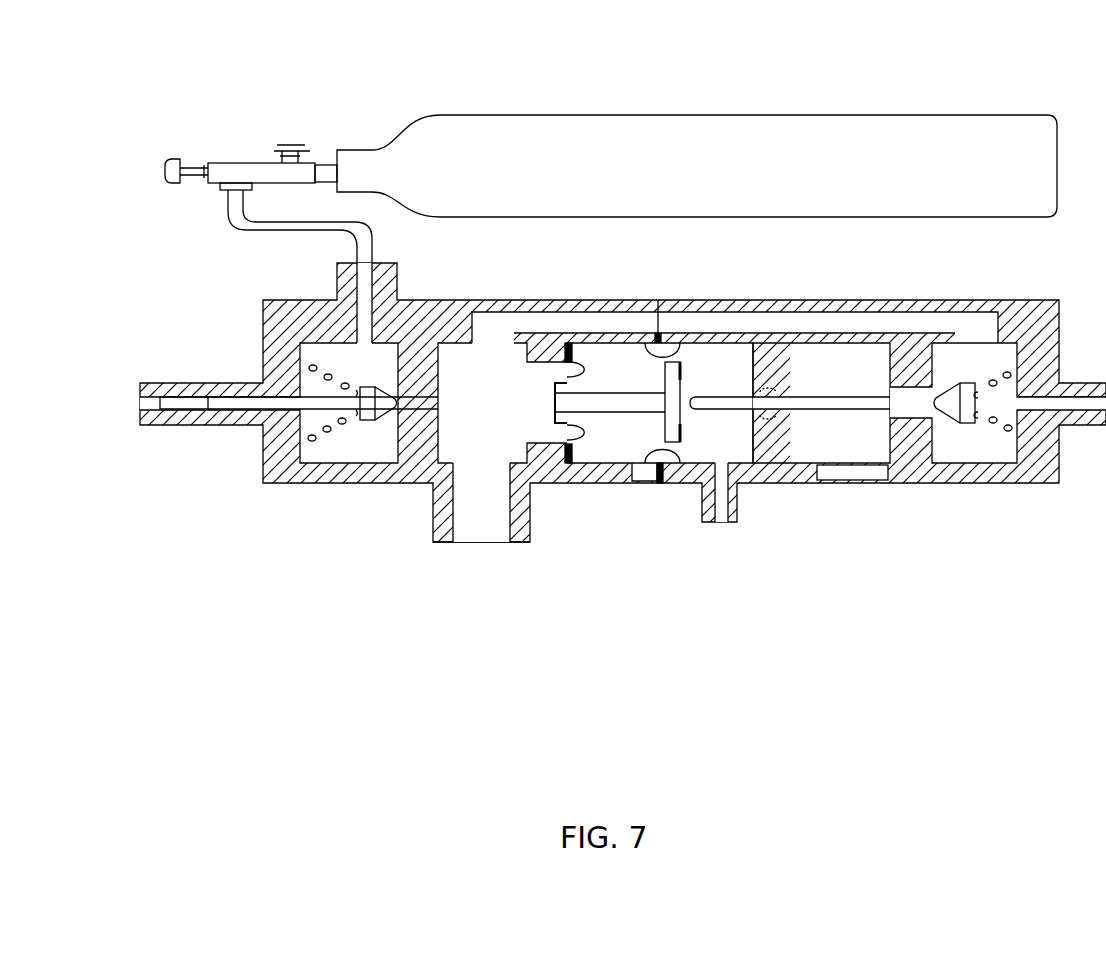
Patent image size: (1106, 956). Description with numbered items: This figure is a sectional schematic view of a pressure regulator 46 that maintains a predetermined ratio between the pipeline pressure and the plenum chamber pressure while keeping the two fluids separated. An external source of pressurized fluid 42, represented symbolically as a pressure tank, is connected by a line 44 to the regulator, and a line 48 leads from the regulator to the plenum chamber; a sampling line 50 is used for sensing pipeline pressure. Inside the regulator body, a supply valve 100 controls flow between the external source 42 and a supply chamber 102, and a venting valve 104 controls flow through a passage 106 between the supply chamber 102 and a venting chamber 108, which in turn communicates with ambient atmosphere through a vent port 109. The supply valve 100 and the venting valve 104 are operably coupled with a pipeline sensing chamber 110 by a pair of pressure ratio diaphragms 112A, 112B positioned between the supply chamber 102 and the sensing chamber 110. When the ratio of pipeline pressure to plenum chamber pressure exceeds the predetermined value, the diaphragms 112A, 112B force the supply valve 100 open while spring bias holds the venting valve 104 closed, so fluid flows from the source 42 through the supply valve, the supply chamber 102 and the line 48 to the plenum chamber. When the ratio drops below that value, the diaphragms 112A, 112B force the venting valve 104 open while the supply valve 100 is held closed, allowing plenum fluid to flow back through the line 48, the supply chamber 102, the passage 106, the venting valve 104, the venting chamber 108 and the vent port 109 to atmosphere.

The external source of pressurized fluid 42 is at (563, 82).
The line 44 is at (375, 235).
The pressure regulator 46 is at (826, 281).
The line 48 is at (505, 529).
The sampling line 50 is at (719, 526).
The supply valve 100 is at (386, 421).
The supply chamber 102 is at (435, 445).
The venting valve 104 is at (940, 425).
The passage 106 is at (923, 320).
The venting chamber 108 is at (812, 445).
The vent port 109 is at (815, 467).
The pipeline sensing chamber 110 is at (702, 443).
The pressure ratio diaphragm 112A is at (660, 350).
The pressure ratio diaphragm 112B is at (566, 372).